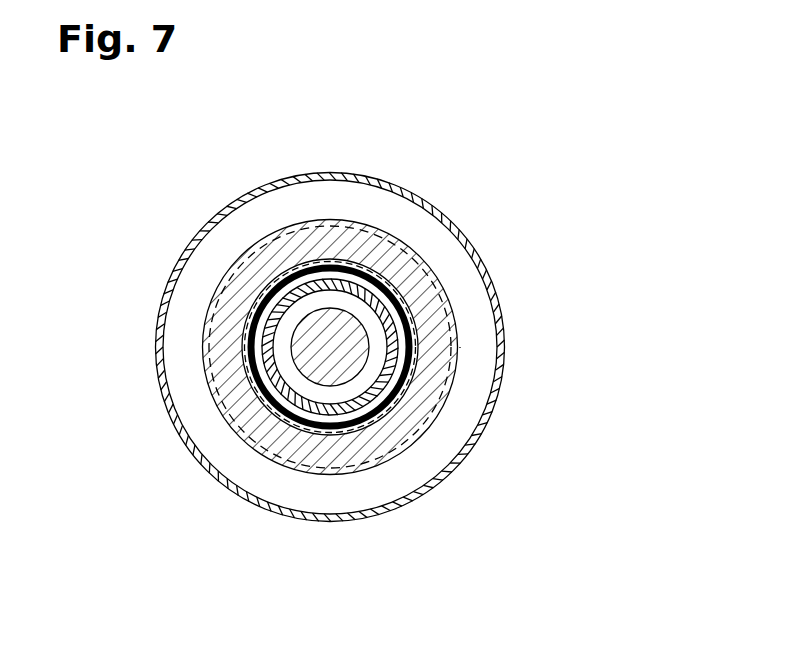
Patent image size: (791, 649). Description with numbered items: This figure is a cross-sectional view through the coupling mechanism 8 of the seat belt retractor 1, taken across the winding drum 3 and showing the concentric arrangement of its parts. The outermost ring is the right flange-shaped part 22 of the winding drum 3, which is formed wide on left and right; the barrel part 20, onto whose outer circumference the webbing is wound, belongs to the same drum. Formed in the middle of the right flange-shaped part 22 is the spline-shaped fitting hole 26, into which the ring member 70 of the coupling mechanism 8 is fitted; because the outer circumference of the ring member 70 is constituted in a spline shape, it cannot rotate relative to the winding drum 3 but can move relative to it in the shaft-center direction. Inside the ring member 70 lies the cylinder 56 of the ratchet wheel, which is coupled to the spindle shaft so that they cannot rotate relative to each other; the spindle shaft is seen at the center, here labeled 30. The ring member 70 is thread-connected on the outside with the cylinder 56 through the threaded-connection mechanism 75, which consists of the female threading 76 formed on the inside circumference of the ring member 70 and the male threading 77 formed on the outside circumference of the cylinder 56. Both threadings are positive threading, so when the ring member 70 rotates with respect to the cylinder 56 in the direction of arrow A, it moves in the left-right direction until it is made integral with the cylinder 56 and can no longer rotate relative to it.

The seat belt retractor 1 is at (553, 145).
The winding drum 3 is at (487, 242).
The coupling mechanism 8 is at (367, 265).
The barrel part 20 is at (222, 275).
The right flange-shaped part 22 is at (497, 308).
The fitting hole 26 is at (300, 358).
The shaft 30 is at (298, 382).
The cylinder 56 is at (416, 340).
The ring member 70 is at (293, 267).
The threaded-connection mechanism 75 is at (482, 580).
The female threading 76 is at (355, 425).
The male threading 77 is at (402, 448).
The arrow A is at (432, 323).